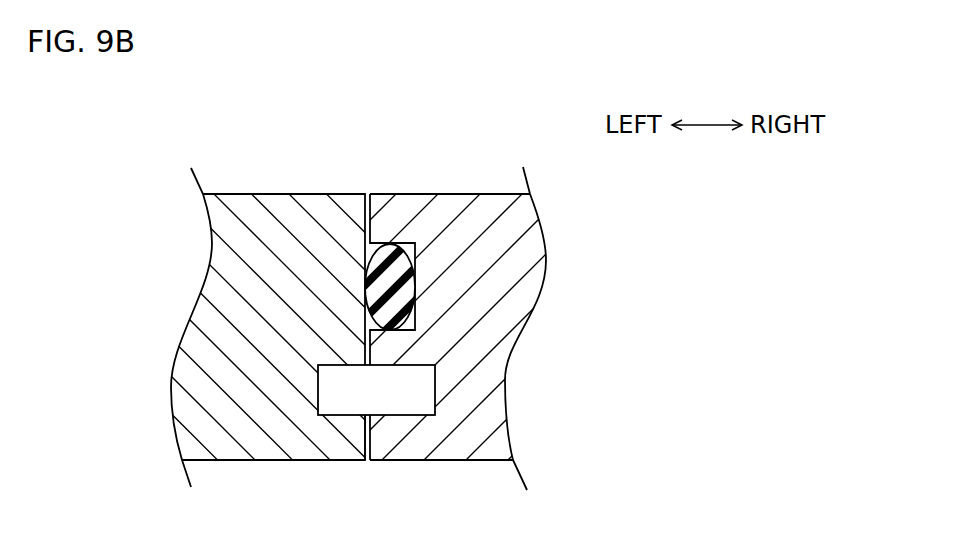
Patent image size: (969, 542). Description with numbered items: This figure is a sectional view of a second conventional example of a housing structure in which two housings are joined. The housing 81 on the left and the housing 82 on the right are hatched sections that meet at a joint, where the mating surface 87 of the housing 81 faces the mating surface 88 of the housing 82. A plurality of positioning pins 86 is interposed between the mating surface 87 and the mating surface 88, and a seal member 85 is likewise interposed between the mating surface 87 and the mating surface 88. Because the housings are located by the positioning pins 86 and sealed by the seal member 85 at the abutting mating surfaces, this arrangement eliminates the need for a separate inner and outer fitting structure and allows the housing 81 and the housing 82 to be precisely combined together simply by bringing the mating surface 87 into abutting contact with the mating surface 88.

The housing 81 is at (292, 208).
The housing 82 is at (473, 208).
The seal member 85 is at (393, 273).
The positioning pins 86 is at (410, 400).
The mating surface 87 is at (372, 218).
The mating surface 88 is at (372, 435).